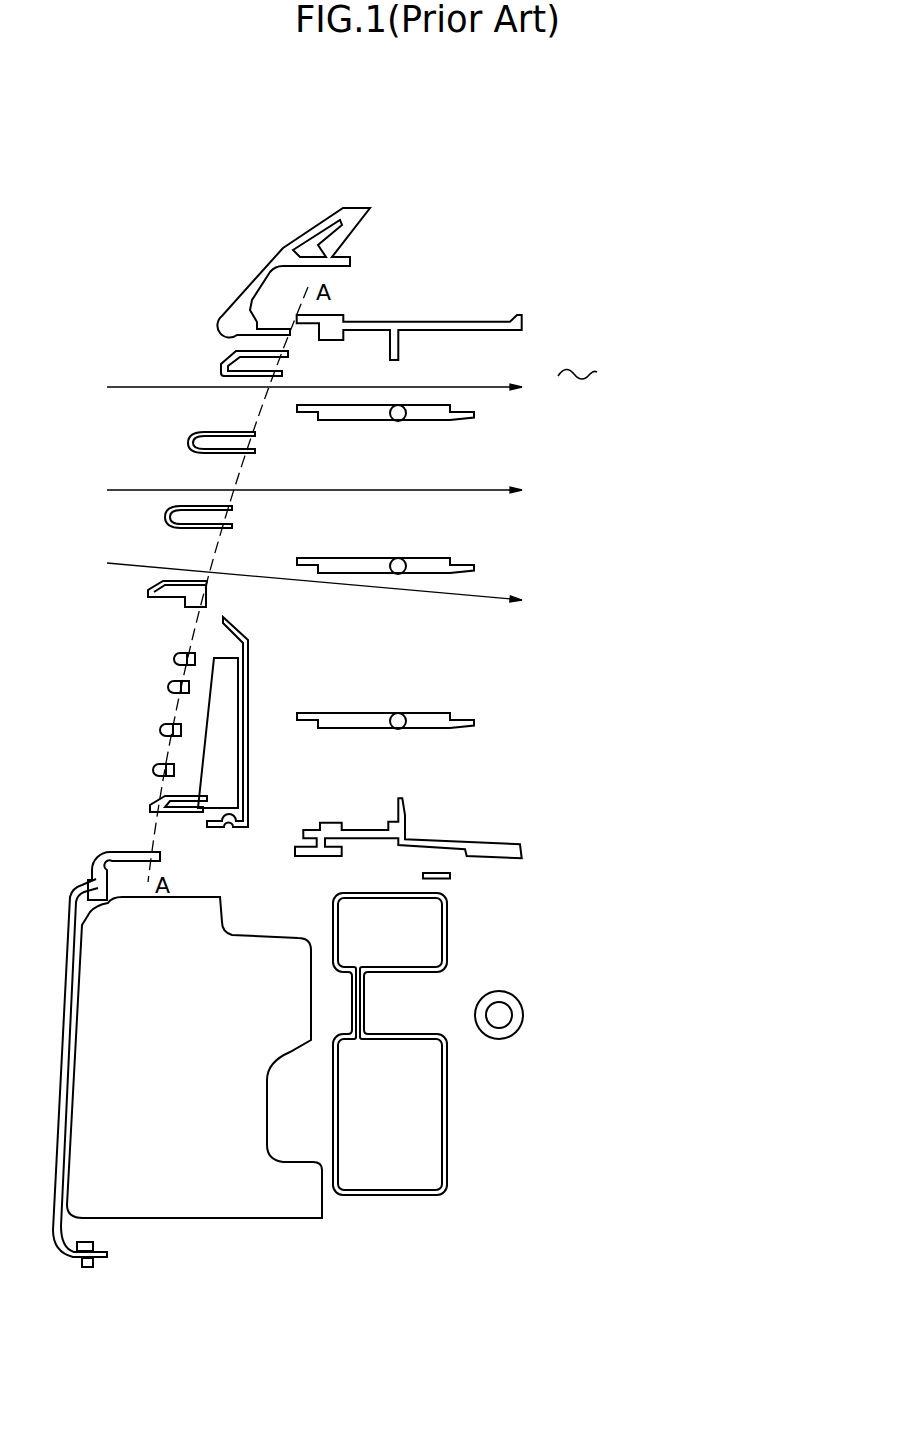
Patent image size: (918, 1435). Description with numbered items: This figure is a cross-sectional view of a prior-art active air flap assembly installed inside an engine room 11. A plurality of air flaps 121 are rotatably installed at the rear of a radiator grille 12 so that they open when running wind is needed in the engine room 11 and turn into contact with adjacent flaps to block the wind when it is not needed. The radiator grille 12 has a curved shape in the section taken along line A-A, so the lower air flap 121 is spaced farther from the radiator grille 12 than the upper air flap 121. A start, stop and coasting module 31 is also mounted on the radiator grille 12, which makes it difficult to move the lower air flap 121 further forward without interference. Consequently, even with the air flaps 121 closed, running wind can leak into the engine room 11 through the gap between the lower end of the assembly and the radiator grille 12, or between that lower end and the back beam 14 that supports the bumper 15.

The engine room 11 is at (582, 372).
The radiator grille 12 is at (223, 357).
The air flap 121 is at (427, 417).
The start, stop and coasting (SSC) module 31 is at (225, 743).
The bumper 15 is at (205, 1200).
The back beam 14 is at (392, 1175).